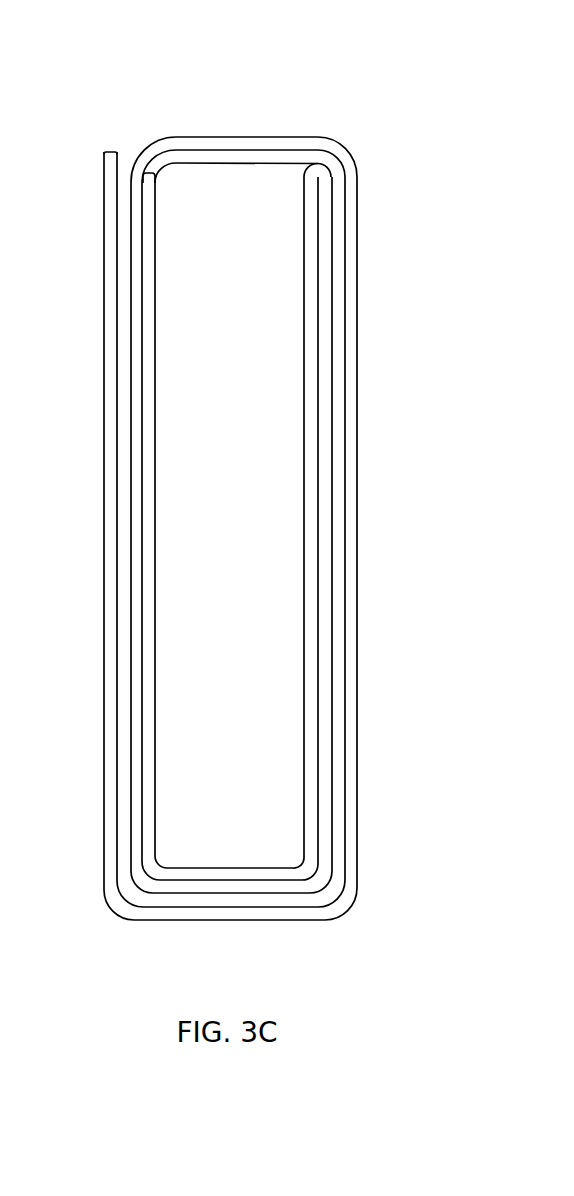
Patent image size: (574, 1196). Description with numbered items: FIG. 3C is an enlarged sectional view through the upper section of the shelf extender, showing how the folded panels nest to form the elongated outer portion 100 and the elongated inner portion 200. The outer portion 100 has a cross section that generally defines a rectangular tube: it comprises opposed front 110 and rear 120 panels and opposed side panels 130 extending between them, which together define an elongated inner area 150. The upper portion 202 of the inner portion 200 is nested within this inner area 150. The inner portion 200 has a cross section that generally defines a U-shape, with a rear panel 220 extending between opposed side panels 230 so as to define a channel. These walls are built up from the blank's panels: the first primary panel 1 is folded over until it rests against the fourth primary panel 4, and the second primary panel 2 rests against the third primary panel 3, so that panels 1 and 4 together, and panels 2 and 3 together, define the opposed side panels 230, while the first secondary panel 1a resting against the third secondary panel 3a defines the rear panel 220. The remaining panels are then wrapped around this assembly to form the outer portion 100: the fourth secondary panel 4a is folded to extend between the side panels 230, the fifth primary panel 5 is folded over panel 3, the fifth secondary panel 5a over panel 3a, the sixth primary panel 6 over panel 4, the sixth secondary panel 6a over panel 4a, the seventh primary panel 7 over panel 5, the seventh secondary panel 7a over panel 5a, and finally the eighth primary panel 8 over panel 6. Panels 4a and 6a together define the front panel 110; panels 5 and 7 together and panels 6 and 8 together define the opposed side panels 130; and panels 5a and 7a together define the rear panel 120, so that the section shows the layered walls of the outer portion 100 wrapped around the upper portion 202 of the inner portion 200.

The outer portion 100 is at (215, 138).
The front panel 110 is at (235, 138).
The rear panel 120 is at (152, 926).
The side panels 130 is at (105, 372).
The inner area 150 is at (197, 202).
The inner portion 200 is at (302, 585).
The upper portion 202 is at (158, 313).
The rear panel 220 is at (268, 868).
The side panels 230 is at (306, 372).
The first primary panel 1 is at (143, 632).
The second primary panel 2 is at (320, 360).
The third primary panel 3 is at (332, 310).
The fourth primary panel 4 is at (130, 587).
The fifth primary panel 5 is at (345, 262).
The sixth primary panel 6 is at (117, 547).
The seventh primary panel 7 is at (357, 220).
The eighth primary panel 8 is at (104, 512).
The first secondary panel 1a is at (292, 883).
The third secondary panel 3a is at (248, 895).
The fifth secondary panel 5a is at (207, 910).
The seventh secondary panel 7a is at (165, 923).
The fourth secondary panel 4a is at (298, 138).
The sixth secondary panel 6a is at (260, 152).